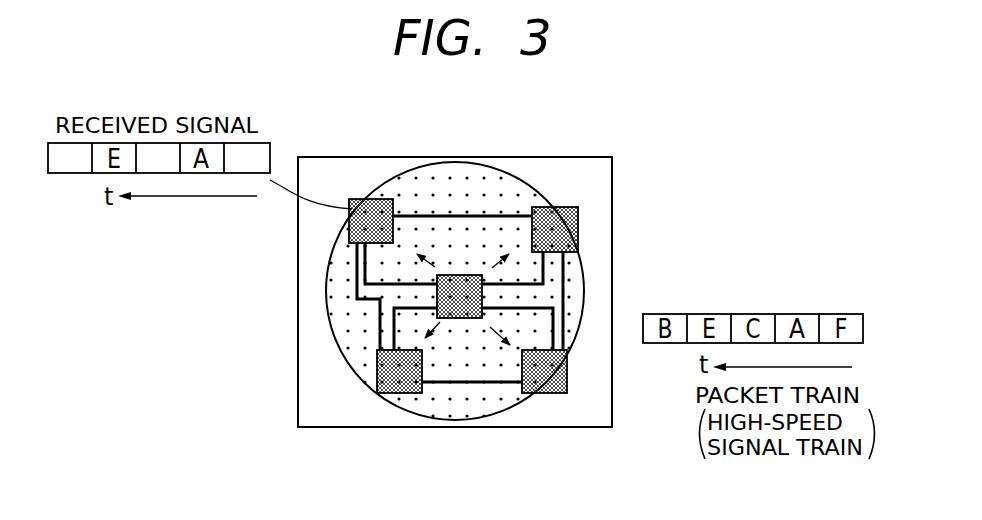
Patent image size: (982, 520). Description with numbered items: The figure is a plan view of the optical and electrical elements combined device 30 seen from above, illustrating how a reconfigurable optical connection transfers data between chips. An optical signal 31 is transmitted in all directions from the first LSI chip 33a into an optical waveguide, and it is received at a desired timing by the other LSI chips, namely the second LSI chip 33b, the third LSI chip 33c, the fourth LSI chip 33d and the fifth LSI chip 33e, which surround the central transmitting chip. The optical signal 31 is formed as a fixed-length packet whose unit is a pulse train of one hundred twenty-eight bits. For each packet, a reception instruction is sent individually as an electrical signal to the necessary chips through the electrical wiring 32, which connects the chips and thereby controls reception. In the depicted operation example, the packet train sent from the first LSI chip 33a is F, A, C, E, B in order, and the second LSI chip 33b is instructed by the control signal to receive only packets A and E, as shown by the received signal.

The optical and electrical elements combined device 30 is at (602, 208).
The optical signal 31 is at (576, 290).
The electrical wiring 32 is at (467, 212).
The LSI chip 1 33a is at (463, 310).
The LSI chip 2 33b is at (392, 206).
The LSI chip 3 33c is at (378, 373).
The LSI chip 4 33d is at (578, 208).
The LSI chip 5 33e is at (567, 381).